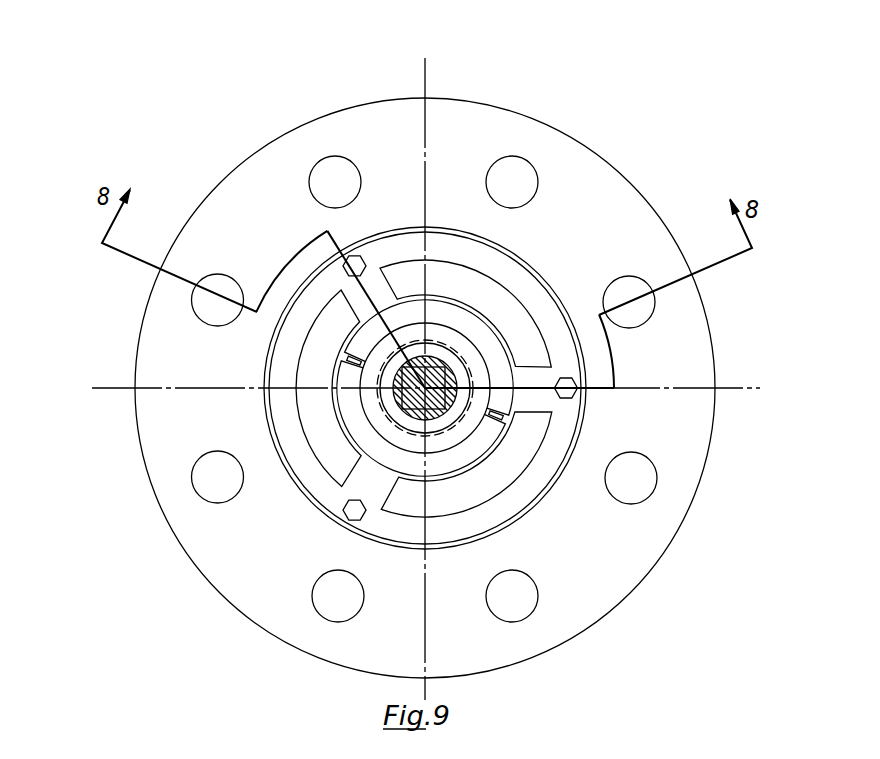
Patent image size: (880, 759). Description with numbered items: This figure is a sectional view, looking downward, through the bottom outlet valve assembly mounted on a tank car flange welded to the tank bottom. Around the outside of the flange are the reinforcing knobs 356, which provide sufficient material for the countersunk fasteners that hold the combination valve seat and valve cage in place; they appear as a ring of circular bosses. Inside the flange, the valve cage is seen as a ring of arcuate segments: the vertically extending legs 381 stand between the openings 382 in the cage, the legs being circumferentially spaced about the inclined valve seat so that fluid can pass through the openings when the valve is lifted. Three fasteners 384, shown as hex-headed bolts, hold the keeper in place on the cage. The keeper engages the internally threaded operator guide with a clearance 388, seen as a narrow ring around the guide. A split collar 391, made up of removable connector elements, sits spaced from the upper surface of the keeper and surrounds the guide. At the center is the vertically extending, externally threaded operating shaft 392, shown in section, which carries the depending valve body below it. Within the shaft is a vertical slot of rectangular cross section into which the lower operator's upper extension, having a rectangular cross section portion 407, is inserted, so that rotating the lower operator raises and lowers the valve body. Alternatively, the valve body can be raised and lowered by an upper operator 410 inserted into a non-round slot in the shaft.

The reinforcing knobs 356 is at (518, 602).
The vertically extending legs 381 is at (377, 295).
The openings 382 is at (408, 502).
The fasteners 384 is at (578, 382).
The clearance 388 is at (375, 419).
The split collar 391 is at (470, 452).
The operating shaft 392 is at (428, 407).
The rectangular cross section portion 407 is at (390, 392).
The upper operator 410 is at (385, 373).